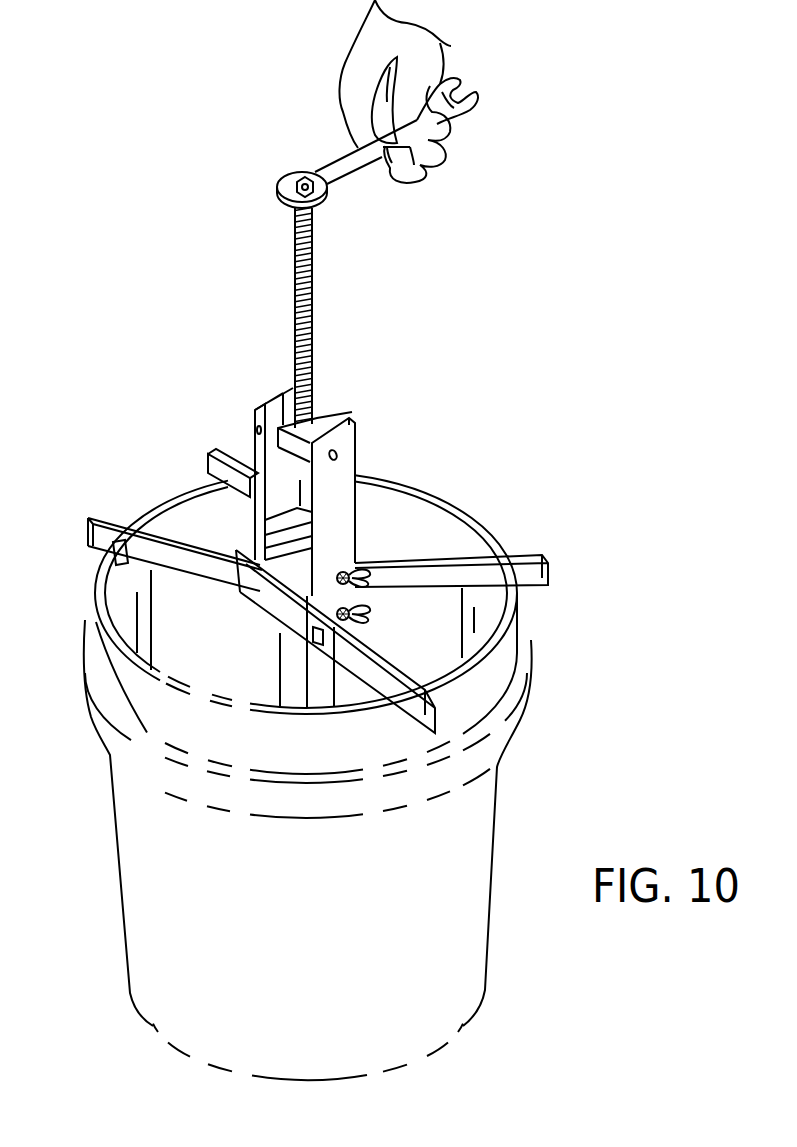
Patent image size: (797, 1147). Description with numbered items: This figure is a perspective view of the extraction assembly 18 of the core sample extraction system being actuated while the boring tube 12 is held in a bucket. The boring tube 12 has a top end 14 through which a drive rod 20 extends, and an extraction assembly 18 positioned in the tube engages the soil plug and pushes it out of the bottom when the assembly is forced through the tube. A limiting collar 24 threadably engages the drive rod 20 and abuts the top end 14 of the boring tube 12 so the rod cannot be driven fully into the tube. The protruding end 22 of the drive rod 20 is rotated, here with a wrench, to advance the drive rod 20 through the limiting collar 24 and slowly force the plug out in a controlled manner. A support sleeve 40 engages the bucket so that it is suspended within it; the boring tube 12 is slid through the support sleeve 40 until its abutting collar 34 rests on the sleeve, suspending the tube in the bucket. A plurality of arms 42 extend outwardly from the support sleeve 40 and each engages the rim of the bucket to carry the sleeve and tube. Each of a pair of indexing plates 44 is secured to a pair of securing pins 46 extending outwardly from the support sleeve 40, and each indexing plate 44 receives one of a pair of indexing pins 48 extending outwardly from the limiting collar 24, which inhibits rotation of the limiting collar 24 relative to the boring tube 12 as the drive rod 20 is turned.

The boring tube 12 is at (355, 498).
The top end 14 is at (256, 466).
The extraction assembly 18 is at (313, 254).
The drive rod 20 is at (300, 245).
The protruding end 22 is at (300, 173).
The limiting collar 24 is at (286, 423).
The abutting collar 34 is at (355, 553).
The support sleeve 40 is at (313, 587).
The arms 42 is at (211, 456).
The indexing plates 44 is at (254, 412).
The securing pins 46 is at (360, 580).
The indexing pins 48 is at (357, 440).